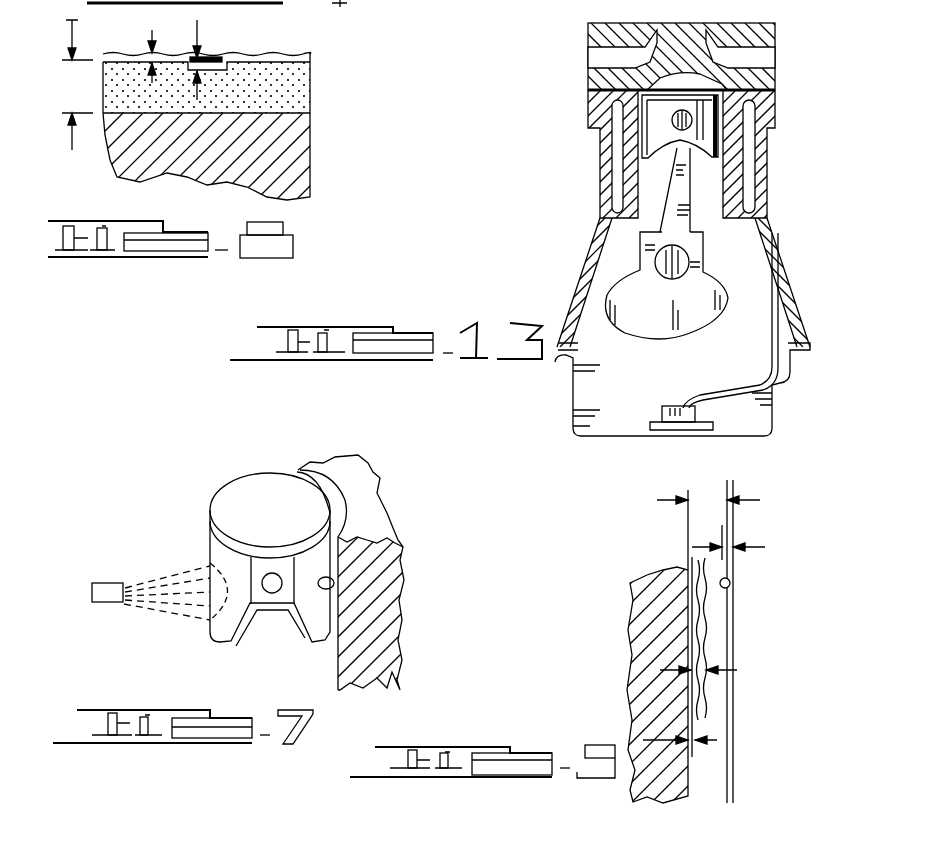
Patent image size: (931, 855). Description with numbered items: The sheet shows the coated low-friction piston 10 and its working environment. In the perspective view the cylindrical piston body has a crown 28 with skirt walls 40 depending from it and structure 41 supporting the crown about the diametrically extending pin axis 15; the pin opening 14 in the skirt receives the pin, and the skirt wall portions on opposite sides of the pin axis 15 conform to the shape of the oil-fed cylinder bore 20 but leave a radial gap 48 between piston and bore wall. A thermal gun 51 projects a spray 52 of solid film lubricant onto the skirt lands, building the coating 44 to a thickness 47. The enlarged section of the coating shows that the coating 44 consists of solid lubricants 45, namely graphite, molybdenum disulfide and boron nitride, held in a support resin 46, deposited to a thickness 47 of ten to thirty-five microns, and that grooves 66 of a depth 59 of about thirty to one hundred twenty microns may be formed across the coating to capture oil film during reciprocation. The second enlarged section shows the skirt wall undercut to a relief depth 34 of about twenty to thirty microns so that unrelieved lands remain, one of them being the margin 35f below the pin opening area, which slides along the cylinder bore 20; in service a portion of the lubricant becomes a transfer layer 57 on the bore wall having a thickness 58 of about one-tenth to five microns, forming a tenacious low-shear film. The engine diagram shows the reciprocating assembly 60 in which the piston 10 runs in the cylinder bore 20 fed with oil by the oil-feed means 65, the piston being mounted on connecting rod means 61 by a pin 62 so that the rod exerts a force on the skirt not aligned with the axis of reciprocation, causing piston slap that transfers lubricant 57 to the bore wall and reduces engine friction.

In FIG. 13, the low-friction piston 10 is at (730, 114).
In FIG. 7, the low-friction piston 10 is at (203, 494).
In FIG. 7, the piston pin bore 14 is at (273, 600).
In FIG. 7, the pin axis 15 is at (270, 588).
In FIG. 13, the cylinder bore 20 is at (737, 173).
In FIG. 7, the cylinder bore 20 is at (333, 584).
In FIG. 7, the crown 28 is at (258, 507).
In FIG. 8, the relief depth 34 is at (150, 32).
In FIG. 9, the relief depth 34 is at (717, 742).
In FIG. 9, the margin 35f is at (719, 673).
In FIG. 8, the skirt walls 40 is at (287, 152).
In FIG. 7, the skirt walls 40 is at (210, 623).
In FIG. 9, the skirt walls 40 is at (659, 685).
In FIG. 7, the supporting structure 41 is at (267, 558).
In FIG. 8, the solid film lubricant coating 44 is at (258, 80).
In FIG. 9, the solid film lubricant coating 44 is at (692, 622).
In FIG. 8, the solid lubricants 45 is at (262, 89).
In FIG. 8, the support resin 46 is at (280, 110).
In FIG. 8, the coating thickness 47 is at (76, 22).
In FIG. 13, the radial gap 48 is at (685, 229).
In FIG. 7, the radial gap 48 is at (290, 508).
In FIG. 9, the radial gap 48 is at (752, 498).
In FIG. 7, the thermal gun 51 is at (112, 585).
In FIG. 7, the spray 52 is at (155, 612).
In FIG. 9, the transfer layer 57 is at (729, 587).
In FIG. 9, the transfer layer thickness 58 is at (753, 547).
In FIG. 8, the groove depth 59 is at (196, 22).
In FIG. 13, the reciprocating assembly 60 is at (724, 263).
In FIG. 13, the connecting rod means 61 is at (677, 217).
In FIG. 13, the pin 62 is at (675, 115).
In FIG. 13, the oil-feed means 65 is at (696, 376).
In FIG. 8, the grooves 66 is at (225, 55).